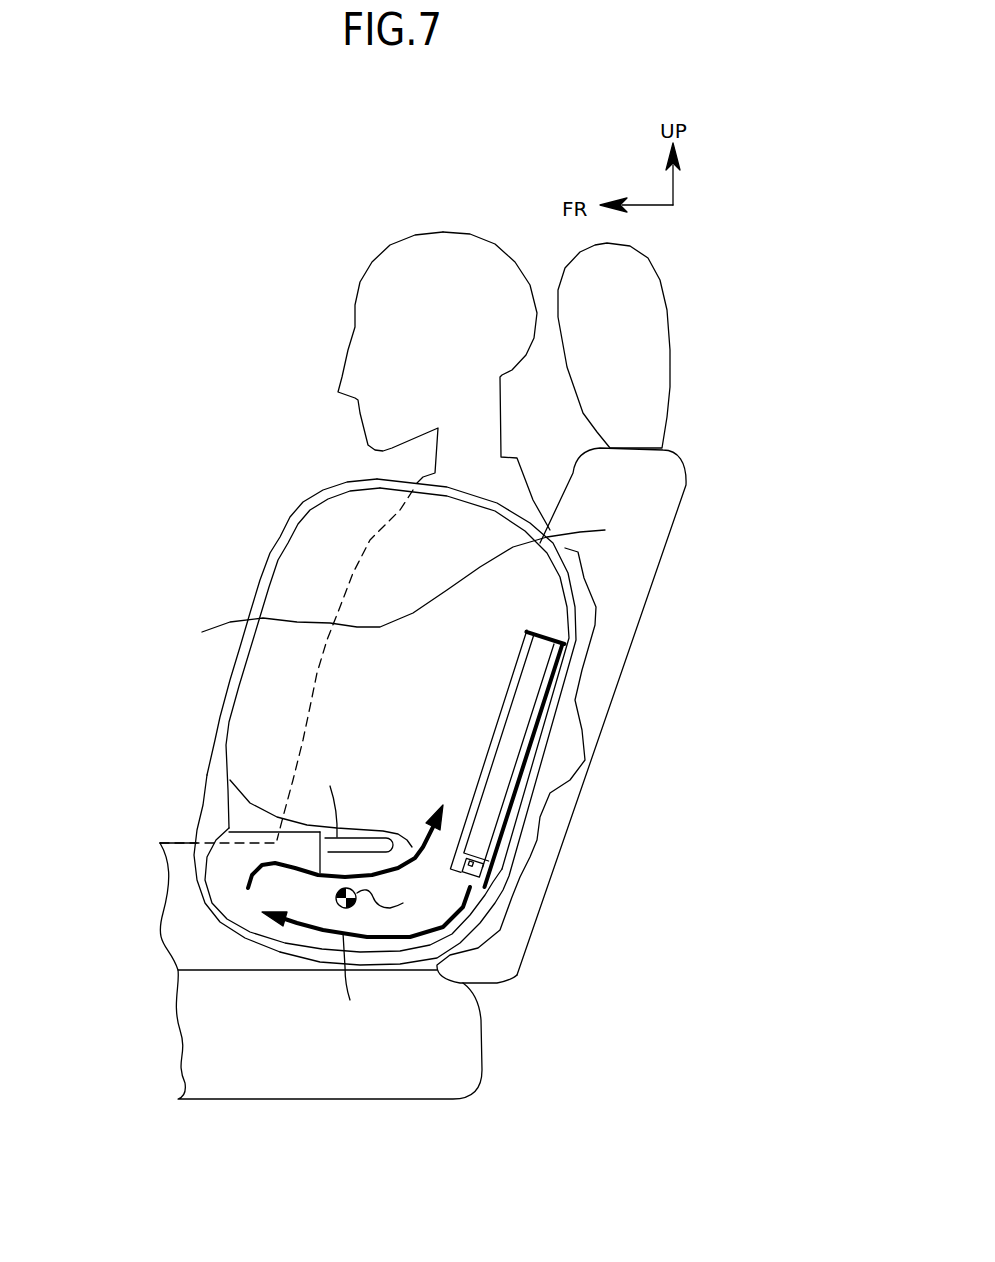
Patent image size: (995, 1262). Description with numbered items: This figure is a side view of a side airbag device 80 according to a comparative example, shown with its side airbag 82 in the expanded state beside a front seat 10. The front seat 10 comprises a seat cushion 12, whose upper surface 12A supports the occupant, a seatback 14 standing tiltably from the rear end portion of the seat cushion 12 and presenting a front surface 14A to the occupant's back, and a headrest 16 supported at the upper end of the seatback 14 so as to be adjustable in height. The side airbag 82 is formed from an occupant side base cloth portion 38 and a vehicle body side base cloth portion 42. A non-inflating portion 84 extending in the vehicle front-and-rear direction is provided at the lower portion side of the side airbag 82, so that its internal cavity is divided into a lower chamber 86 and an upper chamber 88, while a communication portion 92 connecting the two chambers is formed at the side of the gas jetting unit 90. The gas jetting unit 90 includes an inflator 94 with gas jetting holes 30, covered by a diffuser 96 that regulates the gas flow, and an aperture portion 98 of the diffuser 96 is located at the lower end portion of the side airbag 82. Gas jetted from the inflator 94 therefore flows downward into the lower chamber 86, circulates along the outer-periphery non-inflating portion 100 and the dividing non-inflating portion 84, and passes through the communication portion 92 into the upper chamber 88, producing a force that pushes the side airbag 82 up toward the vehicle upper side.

The front seat 10 is at (701, 464).
The seat cushion 12 is at (321, 997).
The seat cushion upper surface 12A is at (407, 1075).
The seatback 14 is at (591, 715).
The seat back front surface 14A is at (623, 645).
The headrest 16 is at (657, 352).
The gas jetting holes 30 is at (477, 863).
The occupant side base cloth portion 38 is at (313, 943).
The vehicle body side base cloth portion 42 is at (337, 517).
The side airbag device 80 is at (173, 628).
The side airbag 82 is at (197, 717).
The non-inflating portion 84 is at (380, 835).
The lower chamber 86 is at (247, 910).
The upper chamber 88 is at (404, 685).
The gas jetting unit 90 is at (581, 758).
The communication portion 92 is at (407, 840).
The inflator 94 is at (522, 720).
The diffuser 96 is at (525, 768).
The aperture portion 98 is at (488, 895).
The non-inflating portion 100 is at (232, 930).